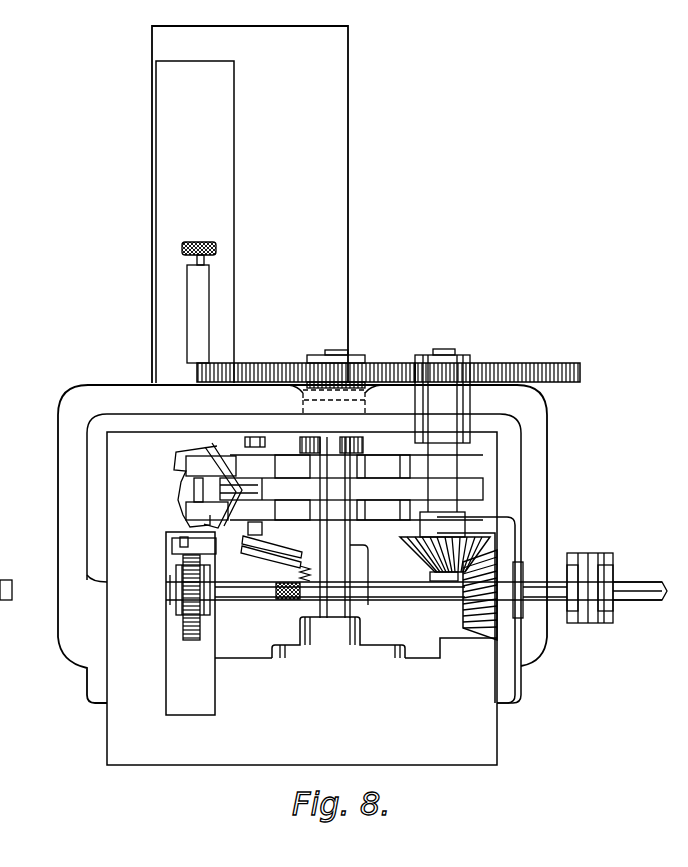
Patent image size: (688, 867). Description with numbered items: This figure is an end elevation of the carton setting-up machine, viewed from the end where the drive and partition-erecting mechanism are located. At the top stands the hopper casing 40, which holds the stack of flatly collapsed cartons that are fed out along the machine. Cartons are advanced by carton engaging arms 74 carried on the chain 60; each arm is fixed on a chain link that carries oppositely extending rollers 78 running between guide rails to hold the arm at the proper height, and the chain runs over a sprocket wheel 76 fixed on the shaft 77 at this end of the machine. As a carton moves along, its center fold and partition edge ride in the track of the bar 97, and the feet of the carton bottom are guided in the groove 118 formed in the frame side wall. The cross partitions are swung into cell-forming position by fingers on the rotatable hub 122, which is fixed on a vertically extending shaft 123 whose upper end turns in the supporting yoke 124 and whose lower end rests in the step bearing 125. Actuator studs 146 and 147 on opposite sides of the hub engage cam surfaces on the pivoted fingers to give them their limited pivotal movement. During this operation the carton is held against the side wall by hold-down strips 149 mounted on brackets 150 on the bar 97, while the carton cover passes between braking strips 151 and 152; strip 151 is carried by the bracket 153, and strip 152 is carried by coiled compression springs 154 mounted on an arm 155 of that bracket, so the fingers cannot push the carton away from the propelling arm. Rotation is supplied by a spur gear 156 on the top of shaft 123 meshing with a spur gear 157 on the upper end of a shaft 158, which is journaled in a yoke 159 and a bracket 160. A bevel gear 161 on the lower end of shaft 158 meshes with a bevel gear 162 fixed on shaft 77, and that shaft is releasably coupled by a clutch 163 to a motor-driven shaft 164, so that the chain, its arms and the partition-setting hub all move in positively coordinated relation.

The hopper casing 40 is at (348, 207).
The chain 60 is at (190, 620).
The carton engaging arm 74 is at (190, 533).
The sprocket wheel 76 is at (187, 576).
The shaft 77 is at (400, 600).
The roller 78 is at (178, 548).
The bar 97 is at (266, 489).
The groove 118 is at (172, 489).
The rotatable hub 122 is at (370, 487).
The vertically extending shaft 123 is at (350, 548).
The supporting yoke 124 is at (547, 447).
The step bearing 125 is at (328, 640).
The actuator stud 146 is at (270, 442).
The actuator stud 147 is at (264, 529).
The hold-down strip 149 is at (200, 449).
The bracket 150 is at (227, 467).
The braking strip 151 is at (292, 548).
The braking strip 152 is at (290, 560).
The bracket 153 is at (350, 564).
The coiled compression spring 154 is at (298, 572).
The arm 155 is at (278, 596).
The spur gear 156 is at (236, 363).
The spur gear 157 is at (504, 363).
The shaft 158 is at (450, 353).
The yoke 159 is at (60, 418).
The bracket 160 is at (510, 530).
The bevel gear 161 is at (430, 568).
The bevel gear 162 is at (480, 620).
The clutch 163 is at (585, 625).
The shaft 164 is at (628, 602).